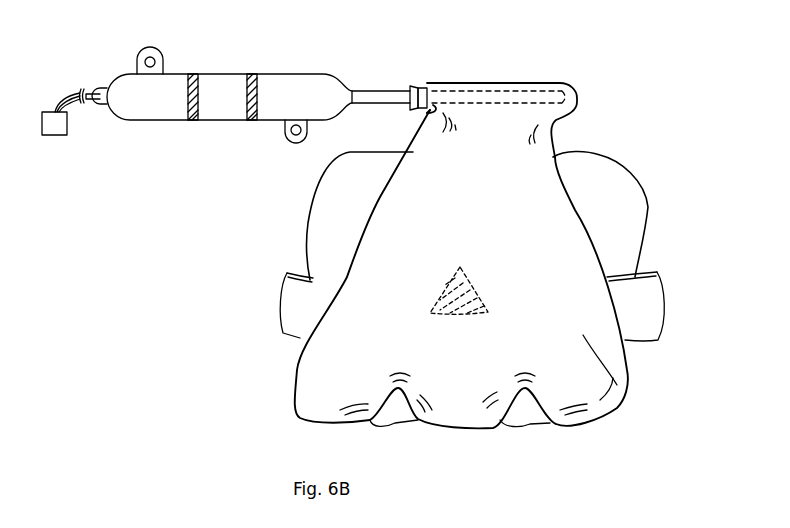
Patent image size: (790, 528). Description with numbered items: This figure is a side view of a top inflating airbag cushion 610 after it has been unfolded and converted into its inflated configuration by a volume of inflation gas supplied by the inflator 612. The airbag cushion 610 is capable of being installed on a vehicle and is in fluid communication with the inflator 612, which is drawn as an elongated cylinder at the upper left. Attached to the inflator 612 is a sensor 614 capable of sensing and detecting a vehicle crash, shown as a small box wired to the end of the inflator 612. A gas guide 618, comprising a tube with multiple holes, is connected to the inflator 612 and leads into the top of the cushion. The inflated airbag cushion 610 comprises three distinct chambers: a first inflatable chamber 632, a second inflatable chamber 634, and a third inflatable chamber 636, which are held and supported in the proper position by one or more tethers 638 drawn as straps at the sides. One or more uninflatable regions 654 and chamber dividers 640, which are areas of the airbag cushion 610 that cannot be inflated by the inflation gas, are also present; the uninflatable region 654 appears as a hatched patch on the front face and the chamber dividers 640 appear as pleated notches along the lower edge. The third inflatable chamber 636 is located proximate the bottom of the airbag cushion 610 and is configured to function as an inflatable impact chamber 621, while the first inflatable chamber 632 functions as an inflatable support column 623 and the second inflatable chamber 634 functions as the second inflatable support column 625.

The airbag cushion 610 is at (582, 140).
The inflator 612 is at (225, 85).
The sensor 614 is at (55, 134).
The gas guide 618 is at (390, 93).
The inflatable impact chamber 621 is at (508, 434).
The inflatable support column 623 is at (630, 236).
The second inflatable support column 625 is at (627, 390).
The first inflatable chamber 632 is at (332, 183).
The second inflatable chamber 634 is at (399, 324).
The third inflatable chamber 636 is at (465, 434).
The tethers 638 is at (285, 302).
The chamber dividers 640 is at (388, 419).
The uninflatable regions 654 is at (468, 280).